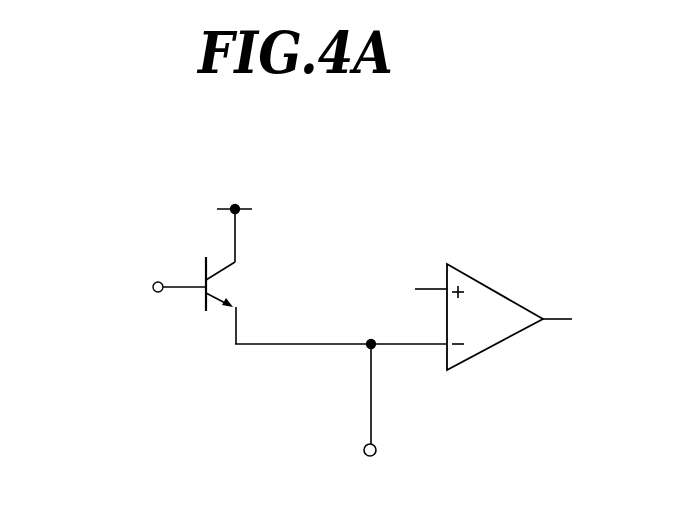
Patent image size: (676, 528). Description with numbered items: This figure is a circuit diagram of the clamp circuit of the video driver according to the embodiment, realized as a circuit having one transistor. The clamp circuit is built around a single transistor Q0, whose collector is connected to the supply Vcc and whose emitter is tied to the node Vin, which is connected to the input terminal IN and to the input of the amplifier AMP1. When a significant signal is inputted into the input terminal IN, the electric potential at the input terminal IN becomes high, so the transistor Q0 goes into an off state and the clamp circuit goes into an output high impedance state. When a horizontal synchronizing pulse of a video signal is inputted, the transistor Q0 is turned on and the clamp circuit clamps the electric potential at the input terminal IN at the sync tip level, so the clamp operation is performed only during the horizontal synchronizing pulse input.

The supply voltage node Vcc is at (257, 229).
The transistor Q0 is at (242, 300).
The input voltage node Vin is at (341, 331).
The input terminal IN is at (377, 450).
The amplifier AMP1 is at (488, 350).